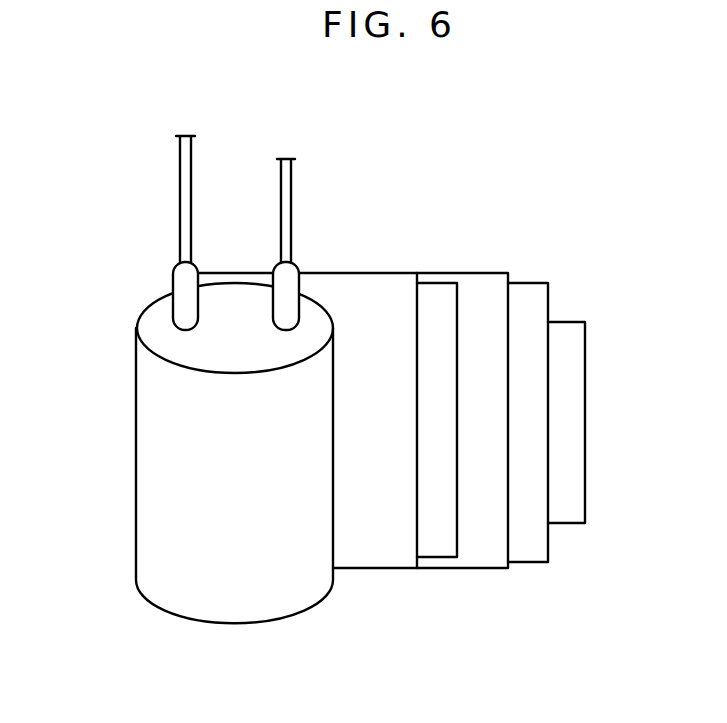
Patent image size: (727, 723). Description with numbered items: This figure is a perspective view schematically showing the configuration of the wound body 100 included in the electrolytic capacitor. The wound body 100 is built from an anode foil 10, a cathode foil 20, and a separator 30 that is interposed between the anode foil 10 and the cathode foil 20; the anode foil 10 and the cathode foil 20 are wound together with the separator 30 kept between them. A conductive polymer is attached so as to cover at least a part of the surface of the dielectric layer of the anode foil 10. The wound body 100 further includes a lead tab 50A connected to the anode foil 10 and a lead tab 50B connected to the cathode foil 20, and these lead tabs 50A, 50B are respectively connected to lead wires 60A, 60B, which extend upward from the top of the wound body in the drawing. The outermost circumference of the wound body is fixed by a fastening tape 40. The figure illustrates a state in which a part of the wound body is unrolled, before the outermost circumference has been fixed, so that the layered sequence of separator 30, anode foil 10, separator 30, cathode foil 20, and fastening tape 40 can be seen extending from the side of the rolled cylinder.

The wound body 100 is at (331, 355).
The anode foil 10 is at (447, 540).
The cathode foil 20 is at (529, 552).
The separator 30 is at (385, 538).
The fastening tape 40 is at (565, 512).
The lead tab 50A is at (183, 280).
The lead tab 50B is at (297, 282).
The lead wire 60A is at (180, 175).
The lead wire 60B is at (293, 165).